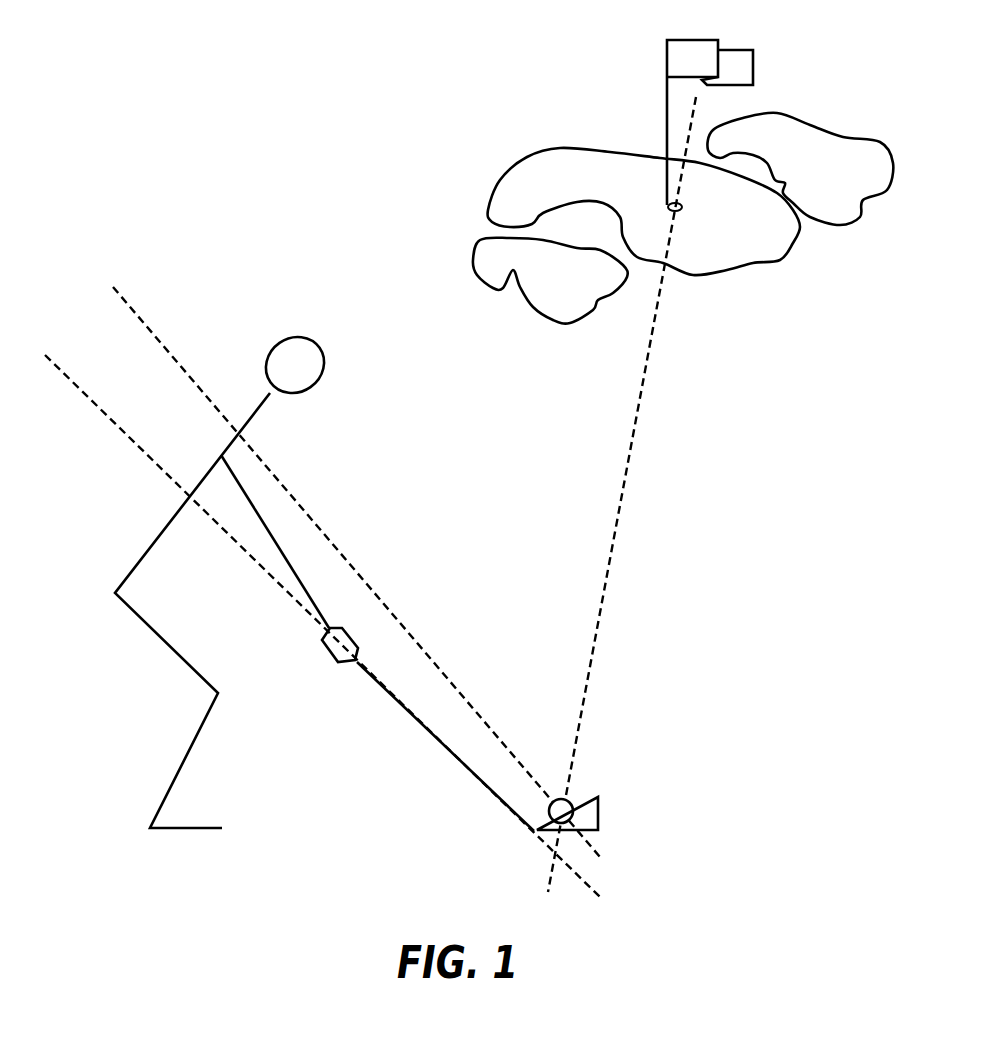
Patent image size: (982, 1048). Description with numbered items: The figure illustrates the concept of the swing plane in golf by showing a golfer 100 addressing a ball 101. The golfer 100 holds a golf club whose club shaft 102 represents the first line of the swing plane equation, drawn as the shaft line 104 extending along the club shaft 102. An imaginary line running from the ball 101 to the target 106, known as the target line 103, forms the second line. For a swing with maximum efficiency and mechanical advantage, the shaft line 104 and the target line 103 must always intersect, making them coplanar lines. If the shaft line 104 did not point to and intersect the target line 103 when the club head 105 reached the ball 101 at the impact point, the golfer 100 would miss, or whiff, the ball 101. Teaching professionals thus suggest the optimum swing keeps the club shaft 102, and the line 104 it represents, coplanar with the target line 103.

The golfer 100 is at (162, 643).
The ball 101 is at (575, 802).
The club shaft 102 is at (420, 728).
The target line 103 is at (607, 580).
The shaft line 104 is at (130, 440).
The club head 105 is at (598, 822).
The target 106 is at (668, 207).